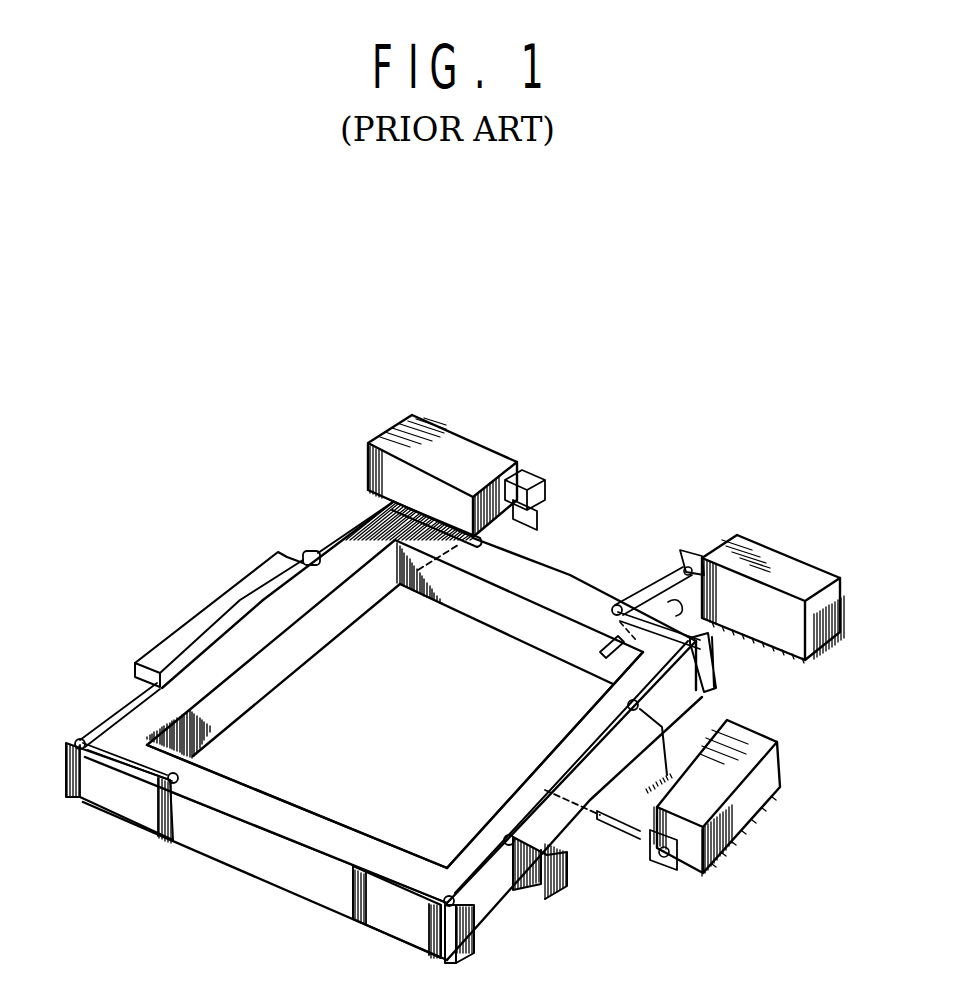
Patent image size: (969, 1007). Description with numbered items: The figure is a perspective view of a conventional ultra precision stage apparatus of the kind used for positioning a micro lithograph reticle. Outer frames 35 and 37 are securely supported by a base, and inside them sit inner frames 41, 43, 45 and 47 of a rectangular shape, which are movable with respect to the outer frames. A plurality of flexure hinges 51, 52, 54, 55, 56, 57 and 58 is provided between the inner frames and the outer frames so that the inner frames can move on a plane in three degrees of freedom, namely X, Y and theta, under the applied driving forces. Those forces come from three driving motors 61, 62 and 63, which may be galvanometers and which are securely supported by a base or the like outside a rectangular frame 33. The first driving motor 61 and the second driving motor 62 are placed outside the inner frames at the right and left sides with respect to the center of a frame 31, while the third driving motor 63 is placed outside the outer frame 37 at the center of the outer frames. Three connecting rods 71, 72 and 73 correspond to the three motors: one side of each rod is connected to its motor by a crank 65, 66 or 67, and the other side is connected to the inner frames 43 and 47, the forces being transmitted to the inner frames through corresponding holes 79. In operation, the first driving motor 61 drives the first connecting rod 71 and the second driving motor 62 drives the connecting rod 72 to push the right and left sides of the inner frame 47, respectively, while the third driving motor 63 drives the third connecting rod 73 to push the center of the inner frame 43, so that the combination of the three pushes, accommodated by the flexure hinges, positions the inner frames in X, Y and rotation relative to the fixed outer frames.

The frame 31 is at (597, 579).
The frame 33 is at (200, 841).
The outer frame 35 is at (230, 597).
The outer frame 37 is at (587, 853).
The inner frame 41 is at (325, 647).
The inner frame 43 is at (517, 797).
The inner frame 45 is at (337, 827).
The inner frame 47 is at (497, 633).
The flexure hinge 51 is at (128, 817).
The flexure hinge 52 is at (388, 928).
The flexure hinge 54 is at (690, 616).
The flexure hinge 55 is at (118, 702).
The flexure hinge 56 is at (338, 542).
The flexure hinge 57 is at (505, 905).
The flexure hinge 58 is at (698, 706).
The first driving motor 61 is at (487, 456).
The second driving motor 62 is at (805, 562).
The third driving motor 63 is at (760, 735).
The crank 65 is at (541, 511).
The crank 66 is at (705, 545).
The crank 67 is at (670, 873).
The first connecting rod 71 is at (503, 531).
The connecting rod 72 is at (662, 590).
The third connecting rod 73 is at (625, 834).
The hole 79 is at (610, 802).